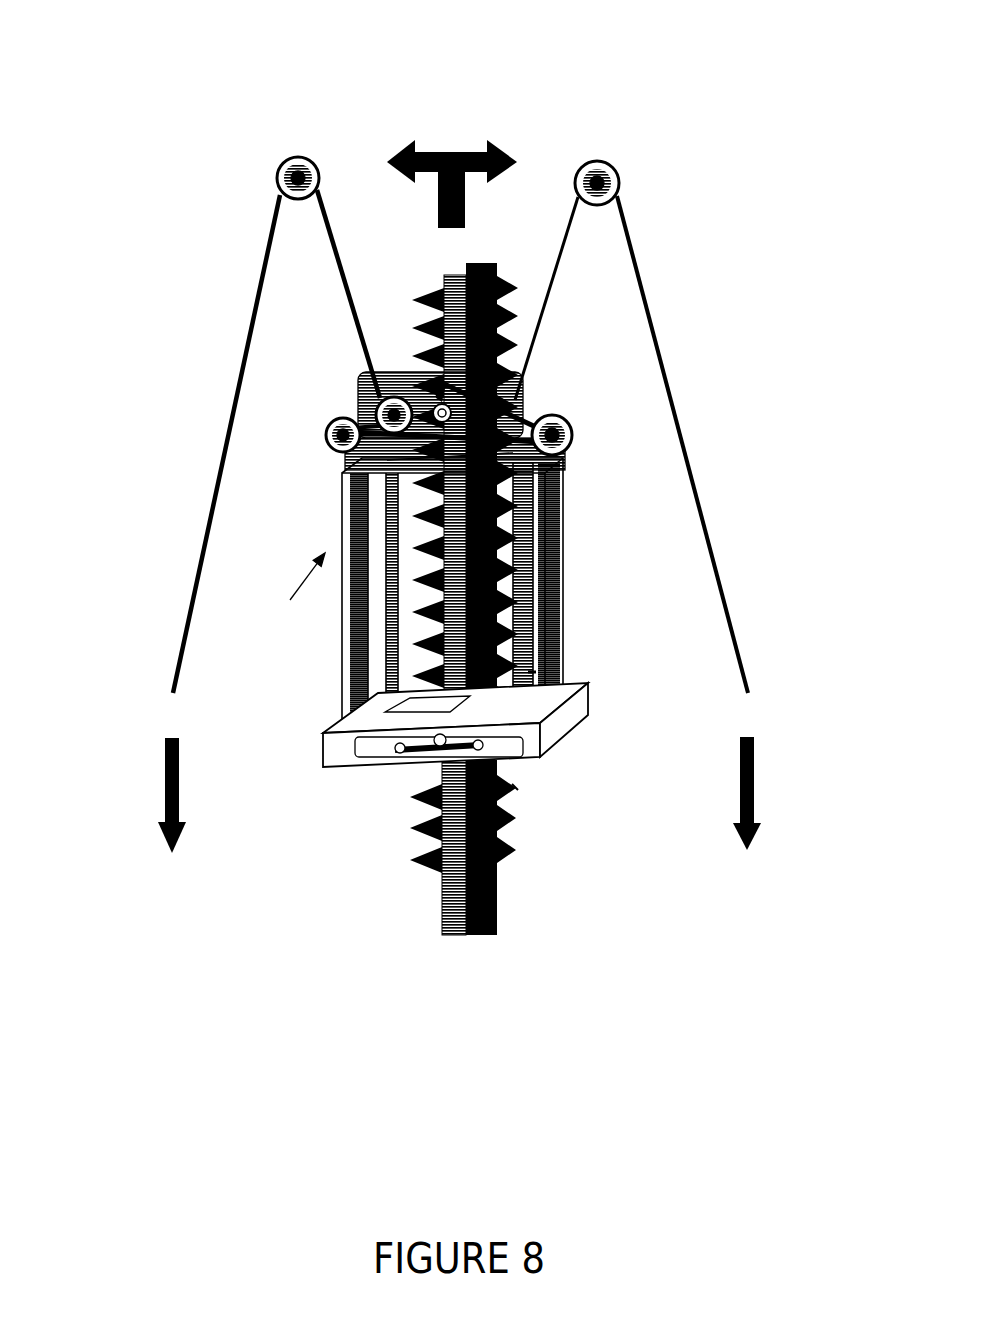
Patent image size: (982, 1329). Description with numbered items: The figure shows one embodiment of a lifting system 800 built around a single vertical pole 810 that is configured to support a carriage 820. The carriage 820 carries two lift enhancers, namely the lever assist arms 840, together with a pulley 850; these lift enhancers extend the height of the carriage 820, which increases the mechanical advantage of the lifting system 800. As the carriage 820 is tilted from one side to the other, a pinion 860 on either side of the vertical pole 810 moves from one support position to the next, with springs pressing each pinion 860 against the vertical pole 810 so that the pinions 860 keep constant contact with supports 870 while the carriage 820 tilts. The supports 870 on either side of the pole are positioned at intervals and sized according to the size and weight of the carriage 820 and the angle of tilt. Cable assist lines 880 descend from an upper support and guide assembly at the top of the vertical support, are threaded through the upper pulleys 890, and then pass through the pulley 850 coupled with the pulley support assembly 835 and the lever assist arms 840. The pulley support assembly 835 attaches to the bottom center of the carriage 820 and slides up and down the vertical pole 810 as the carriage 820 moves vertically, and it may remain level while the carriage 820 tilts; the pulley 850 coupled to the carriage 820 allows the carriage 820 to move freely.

The lifting system 800 is at (135, 73).
The vertical pole 810 is at (405, 891).
The carriage 820 is at (311, 711).
The pulley support assembly 835 is at (372, 380).
The lever assist arms 840 is at (576, 558).
The pulley 850 is at (599, 407).
The pinion 860 is at (515, 786).
The supports 870 is at (530, 671).
The cable assist lines 880 is at (199, 453).
The pulleys 890 is at (612, 170).